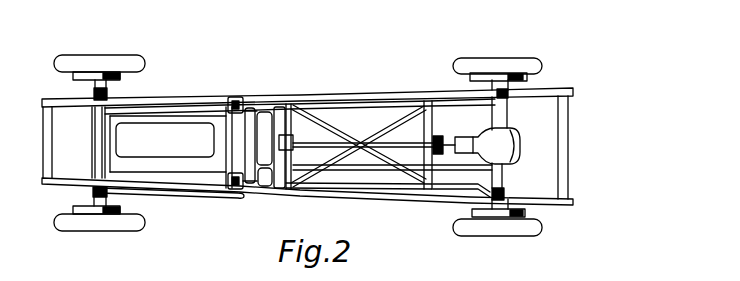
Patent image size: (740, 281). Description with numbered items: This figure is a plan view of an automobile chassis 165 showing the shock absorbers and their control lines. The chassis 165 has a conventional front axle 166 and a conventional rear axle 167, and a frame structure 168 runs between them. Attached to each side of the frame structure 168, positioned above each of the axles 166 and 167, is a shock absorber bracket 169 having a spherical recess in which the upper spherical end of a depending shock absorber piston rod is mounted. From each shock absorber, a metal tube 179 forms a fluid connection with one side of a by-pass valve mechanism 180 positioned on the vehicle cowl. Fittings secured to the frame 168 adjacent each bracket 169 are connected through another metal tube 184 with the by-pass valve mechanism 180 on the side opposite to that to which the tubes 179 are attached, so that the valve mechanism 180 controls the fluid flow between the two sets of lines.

The vehicle chassis 165 is at (372, 93).
The front axle 166 is at (117, 78).
The rear axle 167 is at (500, 123).
The frame structure 168 is at (393, 93).
The shock absorber bracket 169 is at (110, 93).
The metal tube 179 is at (197, 106).
The by-pass valve mechanism 180 is at (267, 186).
The metal tube 184 is at (120, 115).